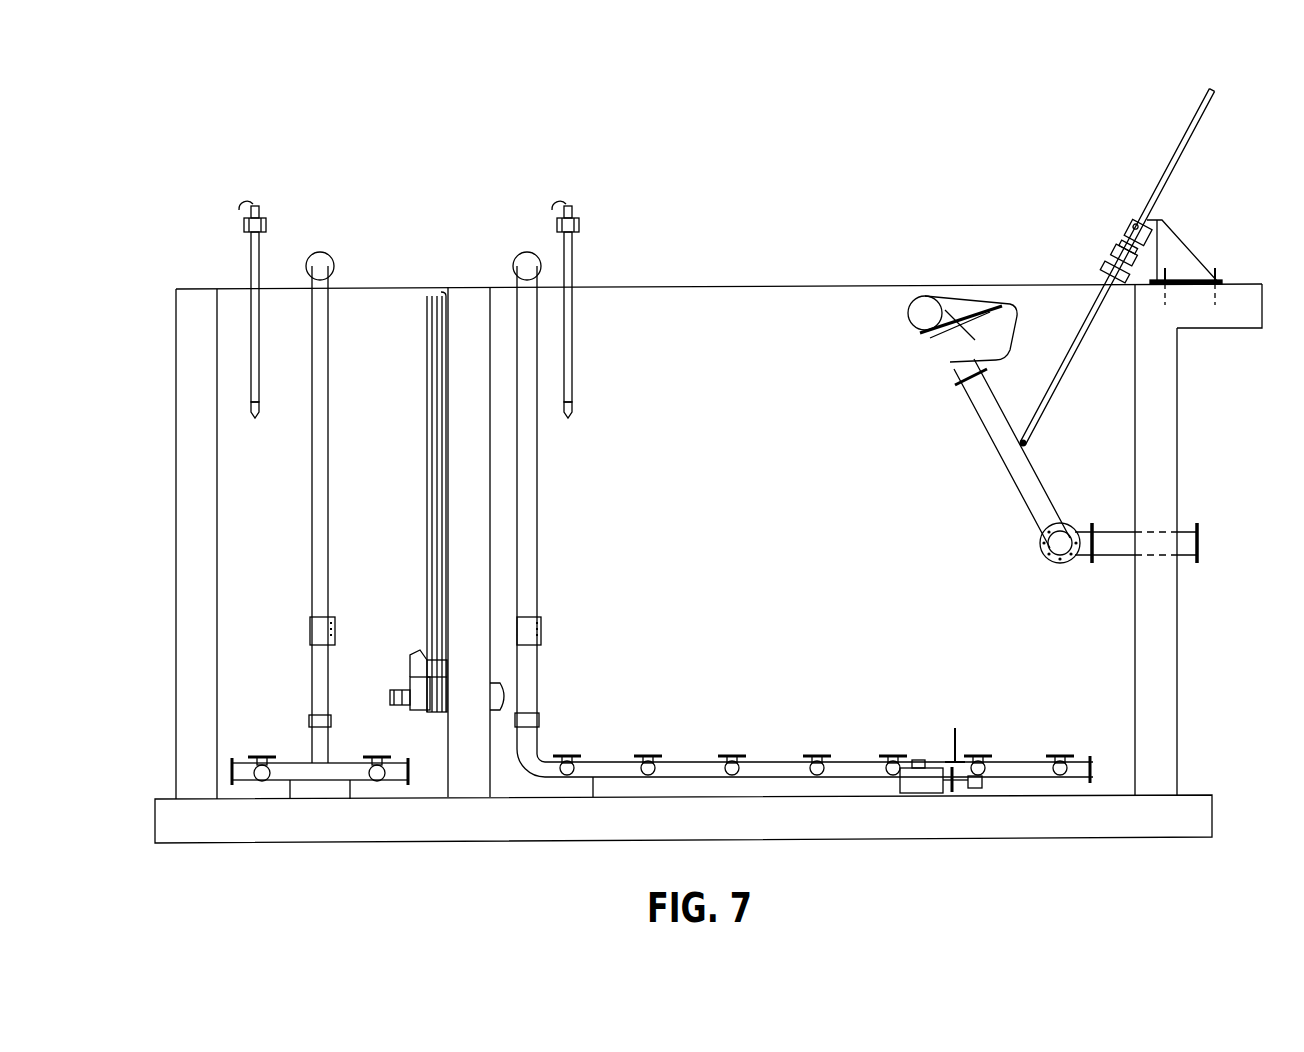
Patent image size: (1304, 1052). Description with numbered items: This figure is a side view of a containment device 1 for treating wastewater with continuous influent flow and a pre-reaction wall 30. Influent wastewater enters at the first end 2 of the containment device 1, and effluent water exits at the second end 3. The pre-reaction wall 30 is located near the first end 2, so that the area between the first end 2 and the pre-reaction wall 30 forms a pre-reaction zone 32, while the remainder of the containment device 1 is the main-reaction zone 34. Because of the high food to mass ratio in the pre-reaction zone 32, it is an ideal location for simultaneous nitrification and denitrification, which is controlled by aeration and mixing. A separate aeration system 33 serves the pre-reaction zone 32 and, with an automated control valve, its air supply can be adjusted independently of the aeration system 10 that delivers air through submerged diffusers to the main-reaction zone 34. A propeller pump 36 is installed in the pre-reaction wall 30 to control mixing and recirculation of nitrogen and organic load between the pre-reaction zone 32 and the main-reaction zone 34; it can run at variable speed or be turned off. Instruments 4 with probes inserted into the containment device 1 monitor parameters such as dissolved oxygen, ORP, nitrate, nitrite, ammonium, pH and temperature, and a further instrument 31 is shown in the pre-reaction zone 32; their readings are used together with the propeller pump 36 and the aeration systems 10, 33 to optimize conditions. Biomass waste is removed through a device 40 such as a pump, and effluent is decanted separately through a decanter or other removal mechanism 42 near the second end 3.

The containment device 1 is at (784, 148).
The first end 2 is at (176, 640).
The second end 3 is at (1178, 637).
The instruments 4 is at (568, 205).
The aeration system 10 is at (526, 254).
The pre-reaction wall 30 is at (501, 293).
The sensor probe 31 is at (250, 207).
The pre-reaction zone 32 is at (260, 554).
The aeration system 33 is at (321, 255).
The main-reaction zone 34 is at (771, 542).
The propeller pump 36 is at (430, 713).
The device 40 is at (940, 795).
The decanter or other removal mechanism 42 is at (1188, 532).